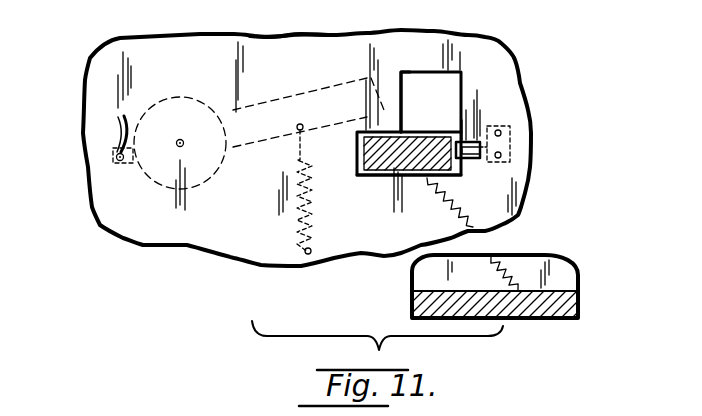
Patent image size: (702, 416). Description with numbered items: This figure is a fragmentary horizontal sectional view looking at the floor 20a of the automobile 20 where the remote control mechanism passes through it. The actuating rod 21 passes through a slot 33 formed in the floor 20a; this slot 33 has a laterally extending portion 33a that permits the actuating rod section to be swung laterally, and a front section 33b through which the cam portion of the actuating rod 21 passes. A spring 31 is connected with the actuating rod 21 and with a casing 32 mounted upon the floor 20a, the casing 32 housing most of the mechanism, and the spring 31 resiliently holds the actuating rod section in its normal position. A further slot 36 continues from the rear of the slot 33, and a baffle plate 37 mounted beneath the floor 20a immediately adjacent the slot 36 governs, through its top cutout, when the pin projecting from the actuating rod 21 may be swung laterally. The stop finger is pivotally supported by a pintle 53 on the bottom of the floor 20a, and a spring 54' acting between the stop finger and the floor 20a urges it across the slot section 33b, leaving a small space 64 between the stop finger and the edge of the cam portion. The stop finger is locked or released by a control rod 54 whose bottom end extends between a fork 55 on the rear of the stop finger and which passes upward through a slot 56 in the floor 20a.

The automobile 20 is at (100, 57).
The floor 20a is at (296, 30).
The slot 56 is at (118, 120).
The control rod 54 is at (84, 152).
The fork 55 is at (128, 167).
The pintle 53 is at (183, 139).
The spring 54' is at (279, 189).
The small space 64 is at (357, 133).
The slot 33 is at (481, 135).
The laterally extending portion 33a is at (409, 71).
The front section 33b is at (373, 178).
The actuating rod 21 is at (390, 165).
The slot 36 is at (470, 162).
The baffle plate 37 is at (486, 111).
The spring 31 is at (468, 214).
The casing 32 is at (561, 276).